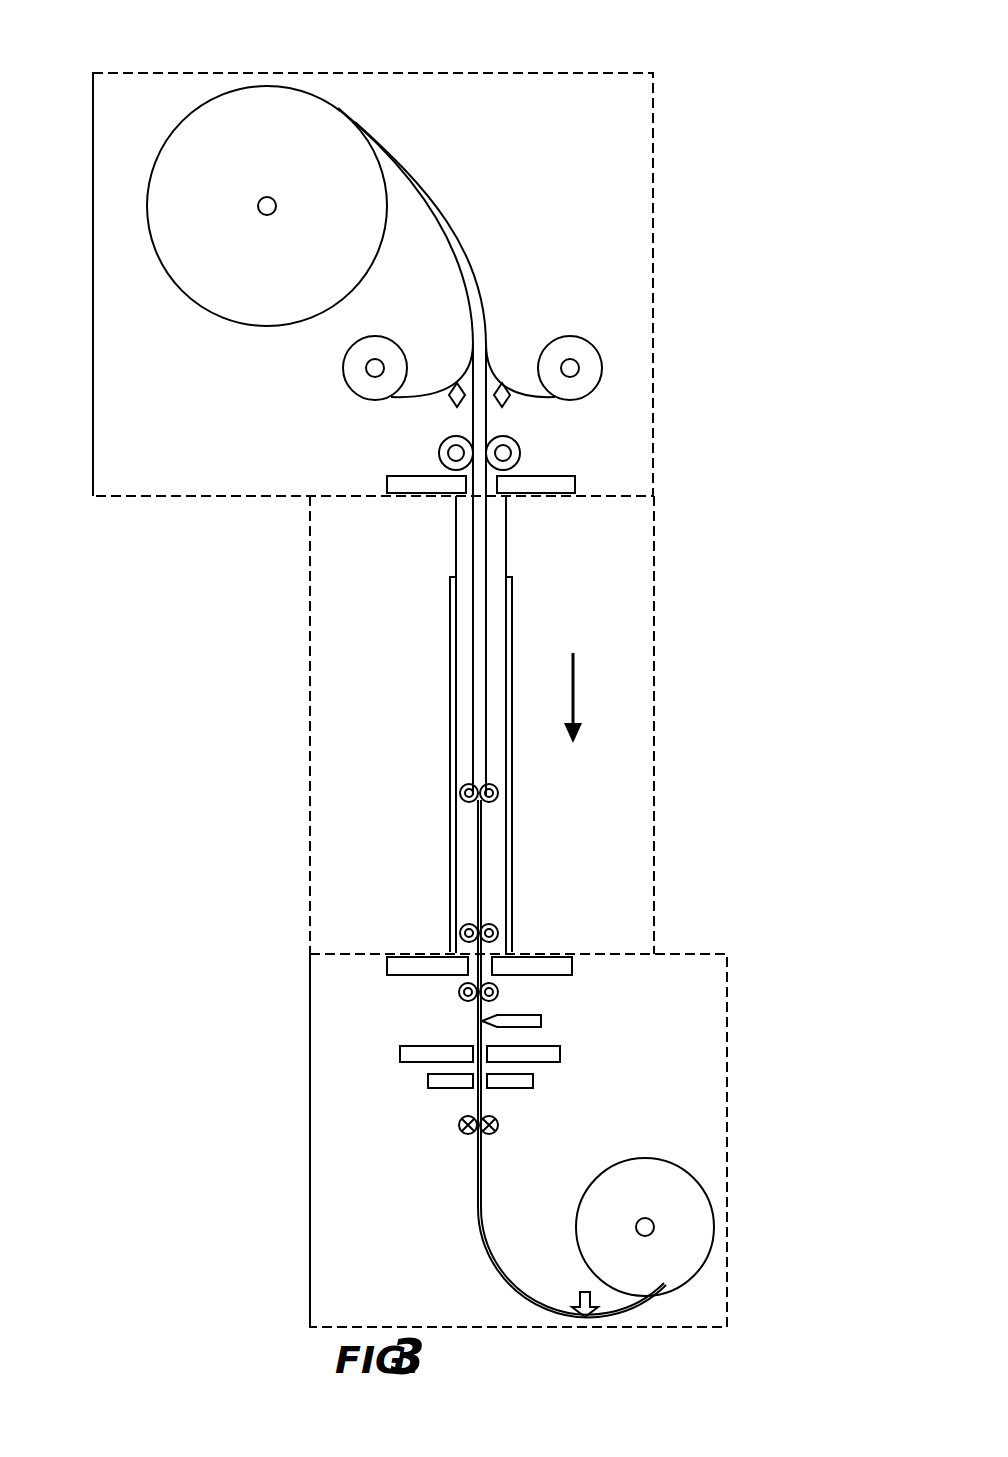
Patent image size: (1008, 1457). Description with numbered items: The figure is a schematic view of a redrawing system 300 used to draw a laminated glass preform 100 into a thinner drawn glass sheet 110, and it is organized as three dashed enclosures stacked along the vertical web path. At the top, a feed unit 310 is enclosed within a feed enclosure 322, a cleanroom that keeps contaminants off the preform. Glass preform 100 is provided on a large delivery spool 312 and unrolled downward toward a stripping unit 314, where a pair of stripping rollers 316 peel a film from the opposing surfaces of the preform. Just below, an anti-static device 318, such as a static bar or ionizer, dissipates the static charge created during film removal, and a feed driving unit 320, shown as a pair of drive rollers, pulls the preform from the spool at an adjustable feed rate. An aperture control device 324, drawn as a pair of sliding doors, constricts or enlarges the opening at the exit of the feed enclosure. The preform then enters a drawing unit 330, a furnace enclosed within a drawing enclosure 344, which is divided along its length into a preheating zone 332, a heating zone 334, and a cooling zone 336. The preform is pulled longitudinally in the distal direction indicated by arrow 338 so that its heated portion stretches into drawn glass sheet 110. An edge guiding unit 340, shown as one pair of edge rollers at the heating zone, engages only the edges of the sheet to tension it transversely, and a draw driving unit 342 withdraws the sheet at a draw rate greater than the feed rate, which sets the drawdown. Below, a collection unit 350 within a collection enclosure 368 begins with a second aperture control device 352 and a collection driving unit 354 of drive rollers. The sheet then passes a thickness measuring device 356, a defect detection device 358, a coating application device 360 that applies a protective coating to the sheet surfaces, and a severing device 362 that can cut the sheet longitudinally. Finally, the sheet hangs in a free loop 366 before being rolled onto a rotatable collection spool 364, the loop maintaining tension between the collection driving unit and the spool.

The glass preform 100 is at (455, 217).
The drawn glass sheet 110 is at (481, 840).
The redrawing system 300 is at (457, 47).
The feed unit 310 is at (659, 71).
The delivery spool 312 is at (152, 162).
The stripping unit 314 is at (512, 349).
The stripping rollers 316 is at (343, 368).
The anti-static device 318 is at (506, 401).
The feed driving unit 320 is at (520, 453).
The feed enclosure 322 is at (93, 447).
The aperture control device 324 is at (575, 480).
The drawing unit 330 is at (669, 577).
The preheating zone 332 is at (443, 575).
The heating zone 334 is at (443, 773).
The cooling zone 336 is at (443, 815).
The arrow indicating distal direction 338 is at (574, 683).
The edge guiding unit 340 is at (498, 793).
The draw driving unit 342 is at (498, 933).
The drawing enclosure 344 is at (310, 920).
The collection unit 350 is at (715, 945).
The aperture control device 352 is at (572, 972).
The collection driving unit 354 is at (498, 992).
The thickness measuring device 356 is at (541, 1021).
The defect detection device 358 is at (560, 1054).
The coating application device 360 is at (533, 1081).
The severing device 362 is at (498, 1125).
The collection spool 364 is at (709, 1257).
The free loop 366 is at (497, 1272).
The collection enclosure 368 is at (310, 1038).